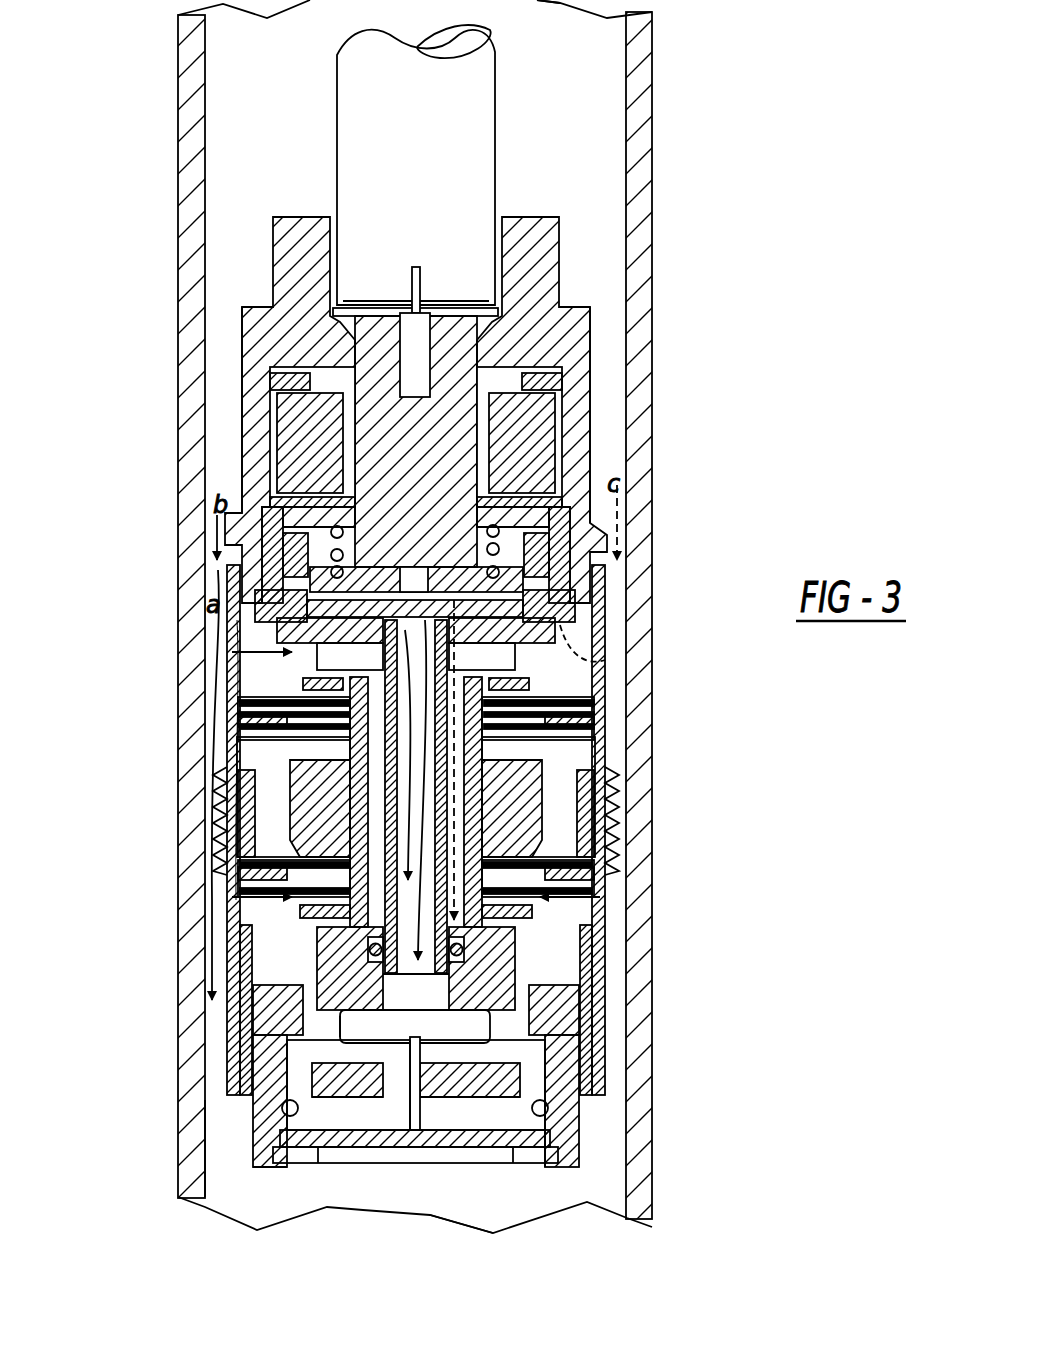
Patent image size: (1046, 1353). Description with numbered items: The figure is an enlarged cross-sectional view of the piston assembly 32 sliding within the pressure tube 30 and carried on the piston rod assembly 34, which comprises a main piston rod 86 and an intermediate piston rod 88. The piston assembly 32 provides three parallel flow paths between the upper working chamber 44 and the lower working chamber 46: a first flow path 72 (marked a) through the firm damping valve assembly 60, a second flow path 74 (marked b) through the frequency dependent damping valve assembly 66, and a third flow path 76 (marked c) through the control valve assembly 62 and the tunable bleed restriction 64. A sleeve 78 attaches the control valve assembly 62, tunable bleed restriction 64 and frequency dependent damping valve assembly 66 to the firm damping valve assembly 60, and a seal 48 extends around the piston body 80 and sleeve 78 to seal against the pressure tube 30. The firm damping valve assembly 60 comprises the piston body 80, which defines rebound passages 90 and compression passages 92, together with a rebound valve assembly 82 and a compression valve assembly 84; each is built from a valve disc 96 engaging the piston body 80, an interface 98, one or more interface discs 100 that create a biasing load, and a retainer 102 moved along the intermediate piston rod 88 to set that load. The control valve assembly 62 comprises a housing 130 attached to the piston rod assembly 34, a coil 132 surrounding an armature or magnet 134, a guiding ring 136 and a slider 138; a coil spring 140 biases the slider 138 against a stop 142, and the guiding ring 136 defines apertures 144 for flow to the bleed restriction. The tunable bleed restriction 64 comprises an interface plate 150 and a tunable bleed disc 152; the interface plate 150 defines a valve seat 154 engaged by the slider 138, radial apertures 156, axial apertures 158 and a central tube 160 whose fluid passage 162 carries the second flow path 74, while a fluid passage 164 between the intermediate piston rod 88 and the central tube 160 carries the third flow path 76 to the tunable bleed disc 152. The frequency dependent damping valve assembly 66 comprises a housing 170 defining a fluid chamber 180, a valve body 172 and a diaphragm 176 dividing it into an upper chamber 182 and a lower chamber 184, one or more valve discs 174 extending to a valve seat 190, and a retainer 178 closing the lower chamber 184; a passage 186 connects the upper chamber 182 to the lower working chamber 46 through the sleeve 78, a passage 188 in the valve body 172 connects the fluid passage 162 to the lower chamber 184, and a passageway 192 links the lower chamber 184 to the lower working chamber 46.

The pressure tube 30 is at (640, 68).
The piston assembly 32 is at (240, 262).
The piston rod assembly 34 is at (424, 153).
The upper working chamber 44 is at (573, 97).
The lower working chamber 46 is at (505, 1224).
The seal 48 is at (625, 808).
The firm damping valve assembly 60 is at (220, 787).
The control valve assembly 62 is at (608, 432).
The tunable bleed restriction 64 is at (233, 920).
The frequency dependent damping valve assembly 66 is at (235, 1117).
The first flow path 72 is at (303, 685).
The second flow path 74 is at (258, 548).
The third flow path 76 is at (552, 535).
The sleeve 78 is at (560, 1080).
The piston body 80 is at (518, 782).
The rebound valve assembly 82 is at (248, 885).
The compression valve assembly 84 is at (605, 692).
The main piston rod 86 is at (452, 193).
The intermediate piston rod 88 is at (565, 850).
The rebound passages 90 is at (262, 815).
The compression passages 92 is at (558, 793).
The valve disc 96 is at (300, 862).
The interface 98 is at (275, 720).
The interface discs 100 is at (300, 703).
The retainer 102 is at (302, 680).
The housing 130 is at (588, 332).
The coil 132 is at (540, 425).
The armature or magnet 134 is at (410, 430).
The guiding ring 136 is at (282, 565).
The slider 138 is at (552, 560).
The coil spring 140 is at (333, 522).
The stop 142 is at (520, 585).
The apertures 144 is at (288, 598).
The interface plate 150 is at (530, 615).
The tunable bleed disc 152 is at (292, 960).
The valve seat 154 is at (512, 630).
The radial apertures 156 is at (283, 652).
The axial apertures 158 is at (570, 470).
The central tube 160 is at (500, 970).
The fluid passage 162 is at (408, 748).
The fluid passage 164 is at (520, 945).
The housing 170 is at (585, 1148).
The valve body 172 is at (418, 1140).
The valve discs 174 is at (548, 1050).
The diaphragm 176 is at (568, 1162).
The retainer 178 is at (268, 1148).
The fluid chamber 180 is at (355, 1025).
The upper chamber 182 is at (348, 1140).
The lower chamber 184 is at (468, 1130).
The passage 186 is at (480, 1043).
The passage 188 is at (560, 1132).
The valve seat 190 is at (345, 1052).
The passageway 192 is at (505, 1150).